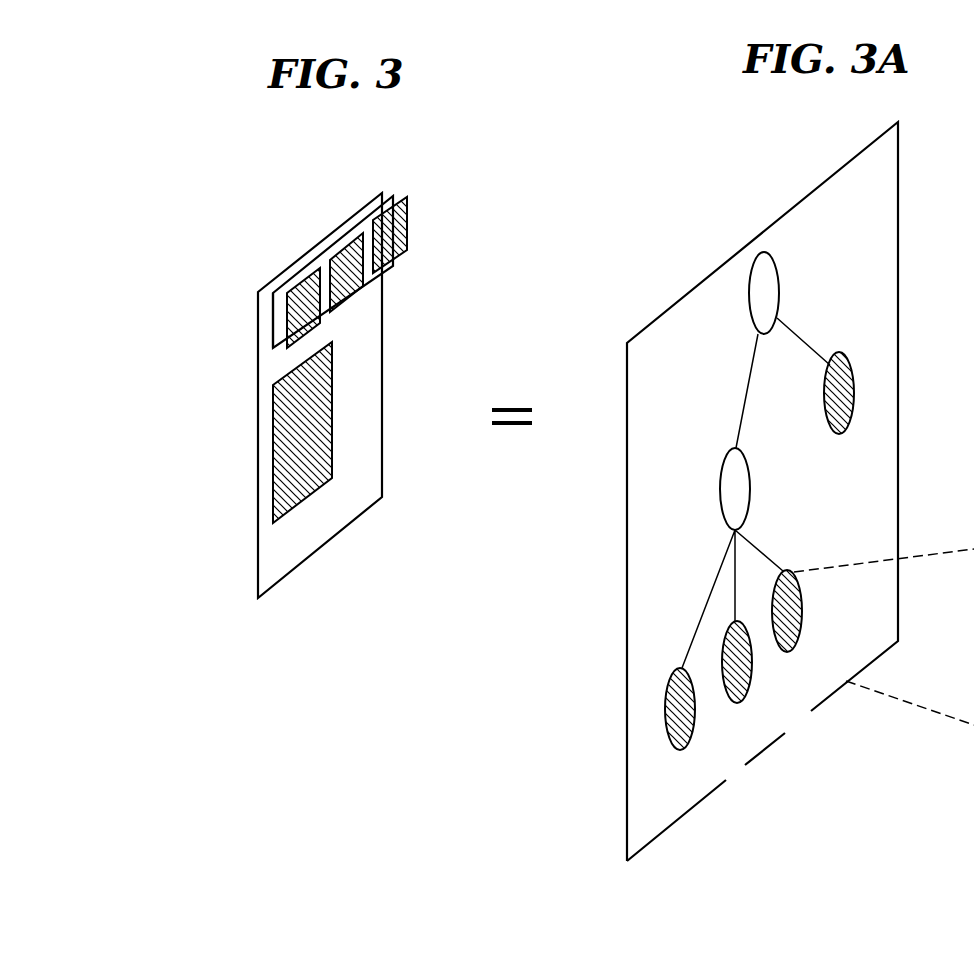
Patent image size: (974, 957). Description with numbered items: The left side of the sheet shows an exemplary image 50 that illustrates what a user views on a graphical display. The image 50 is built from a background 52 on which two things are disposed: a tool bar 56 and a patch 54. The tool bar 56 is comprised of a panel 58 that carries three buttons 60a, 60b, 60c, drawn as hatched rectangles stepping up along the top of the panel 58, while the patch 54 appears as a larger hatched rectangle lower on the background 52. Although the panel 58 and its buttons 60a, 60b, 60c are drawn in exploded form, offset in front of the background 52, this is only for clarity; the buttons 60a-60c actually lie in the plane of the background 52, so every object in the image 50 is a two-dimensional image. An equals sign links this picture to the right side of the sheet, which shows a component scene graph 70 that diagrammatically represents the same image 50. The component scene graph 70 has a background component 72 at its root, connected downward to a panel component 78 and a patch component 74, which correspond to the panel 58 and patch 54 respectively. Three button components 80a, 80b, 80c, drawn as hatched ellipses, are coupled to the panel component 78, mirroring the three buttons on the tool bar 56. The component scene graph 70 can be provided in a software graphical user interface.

In FIG. 3, the image 50 is at (203, 378).
In FIG. 3, the background 52 is at (258, 465).
In FIG. 3, the patch 54 is at (273, 427).
In FIG. 3, the tool bar 56 is at (273, 340).
In FIG. 3, the panel 58 is at (272, 303).
In FIG. 3, the button 60a is at (317, 270).
In FIG. 3, the button 60b is at (357, 238).
In FIG. 3, the button 60c is at (378, 200).
In FIG. 3A, the component scene graph 70 is at (932, 152).
In FIG. 3A, the background component 72 is at (752, 322).
In FIG. 3A, the patch component 74 is at (851, 417).
In FIG. 3A, the panel component 78 is at (720, 480).
In FIG. 3A, the button component 80a is at (681, 666).
In FIG. 3A, the button component 80b is at (741, 620).
In FIG. 3A, the button component 80c is at (802, 608).